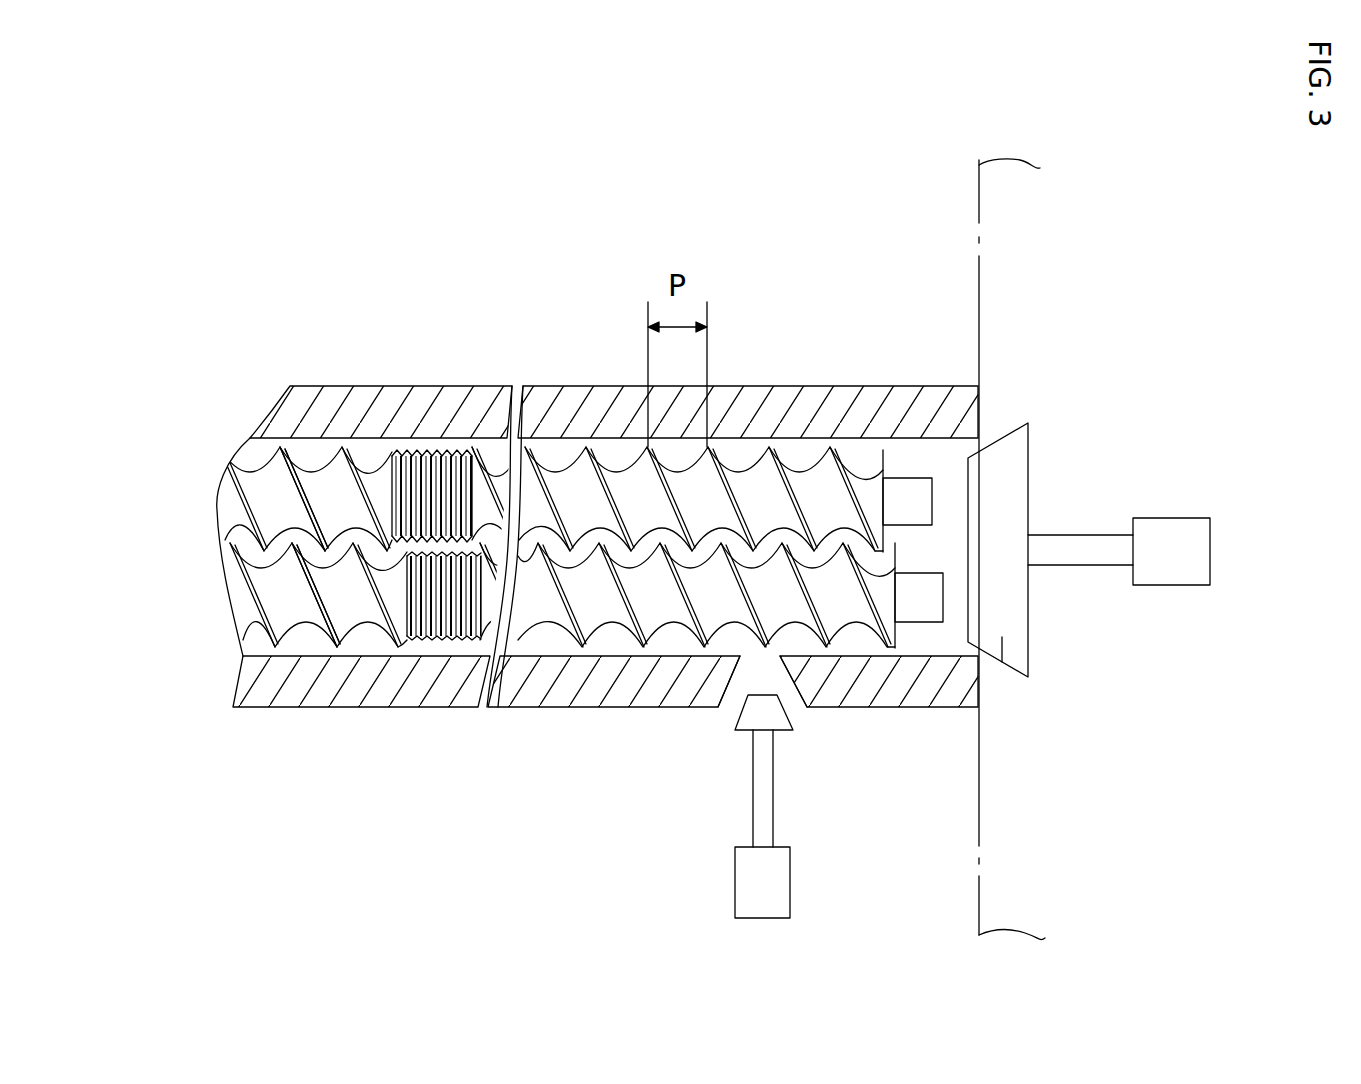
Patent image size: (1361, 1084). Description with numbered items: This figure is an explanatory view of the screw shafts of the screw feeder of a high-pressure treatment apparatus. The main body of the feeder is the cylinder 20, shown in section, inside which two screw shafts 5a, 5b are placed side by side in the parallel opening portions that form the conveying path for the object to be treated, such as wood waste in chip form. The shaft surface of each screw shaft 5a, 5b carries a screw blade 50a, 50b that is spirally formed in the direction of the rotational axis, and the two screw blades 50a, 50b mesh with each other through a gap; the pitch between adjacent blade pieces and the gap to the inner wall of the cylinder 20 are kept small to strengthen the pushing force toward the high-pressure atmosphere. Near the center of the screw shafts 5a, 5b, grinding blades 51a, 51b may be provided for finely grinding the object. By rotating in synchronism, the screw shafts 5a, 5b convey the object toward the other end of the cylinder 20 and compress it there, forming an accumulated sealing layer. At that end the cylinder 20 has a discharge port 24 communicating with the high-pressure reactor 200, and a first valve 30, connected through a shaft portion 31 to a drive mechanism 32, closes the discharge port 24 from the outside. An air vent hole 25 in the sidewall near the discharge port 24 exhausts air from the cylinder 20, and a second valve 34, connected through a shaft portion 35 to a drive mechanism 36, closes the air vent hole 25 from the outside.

The cylinder 20 is at (567, 707).
The screw shaft 5a is at (511, 665).
The screw shaft 5b is at (506, 428).
The screw blade 50a is at (310, 630).
The screw blade 50b is at (300, 460).
The grinding blade 51a is at (440, 645).
The grinding blade 51b is at (420, 460).
The high-pressure reactor 200 is at (979, 193).
The discharge port 24 is at (1002, 662).
The air vent hole 25 is at (762, 678).
The first valve 30 is at (1030, 463).
The shaft portion 31 is at (1075, 568).
The drive mechanism 32 is at (1168, 518).
The second valve 34 is at (733, 717).
The shaft portion 35 is at (753, 795).
The drive mechanism 36 is at (735, 878).